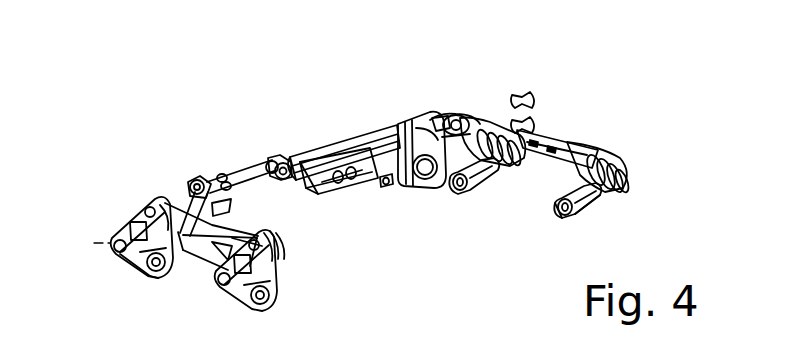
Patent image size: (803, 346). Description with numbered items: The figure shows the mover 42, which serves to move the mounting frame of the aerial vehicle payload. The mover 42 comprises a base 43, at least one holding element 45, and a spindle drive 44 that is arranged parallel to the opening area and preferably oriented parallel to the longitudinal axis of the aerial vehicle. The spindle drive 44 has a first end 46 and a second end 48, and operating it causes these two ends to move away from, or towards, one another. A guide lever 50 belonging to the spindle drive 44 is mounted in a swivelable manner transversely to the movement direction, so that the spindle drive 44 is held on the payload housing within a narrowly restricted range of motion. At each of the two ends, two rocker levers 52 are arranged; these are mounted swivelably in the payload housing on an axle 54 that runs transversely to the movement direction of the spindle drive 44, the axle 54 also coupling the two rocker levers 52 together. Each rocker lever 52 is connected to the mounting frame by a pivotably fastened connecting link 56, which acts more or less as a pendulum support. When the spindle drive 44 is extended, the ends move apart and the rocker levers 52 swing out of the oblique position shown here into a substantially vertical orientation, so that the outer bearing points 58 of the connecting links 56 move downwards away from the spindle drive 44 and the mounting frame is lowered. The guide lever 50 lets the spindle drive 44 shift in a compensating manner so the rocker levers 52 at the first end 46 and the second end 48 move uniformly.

The mover 42 is at (580, 62).
The base 43 is at (365, 145).
The spindle drive 44 is at (327, 147).
The holding element 45 is at (101, 228).
The first end 46 is at (200, 180).
The second end 48 is at (457, 112).
The guide lever 50 is at (278, 158).
The rocker lever 52 is at (133, 220).
The axle 54 is at (245, 227).
The connecting link 56 is at (140, 262).
The outer bearing point 58 is at (170, 277).